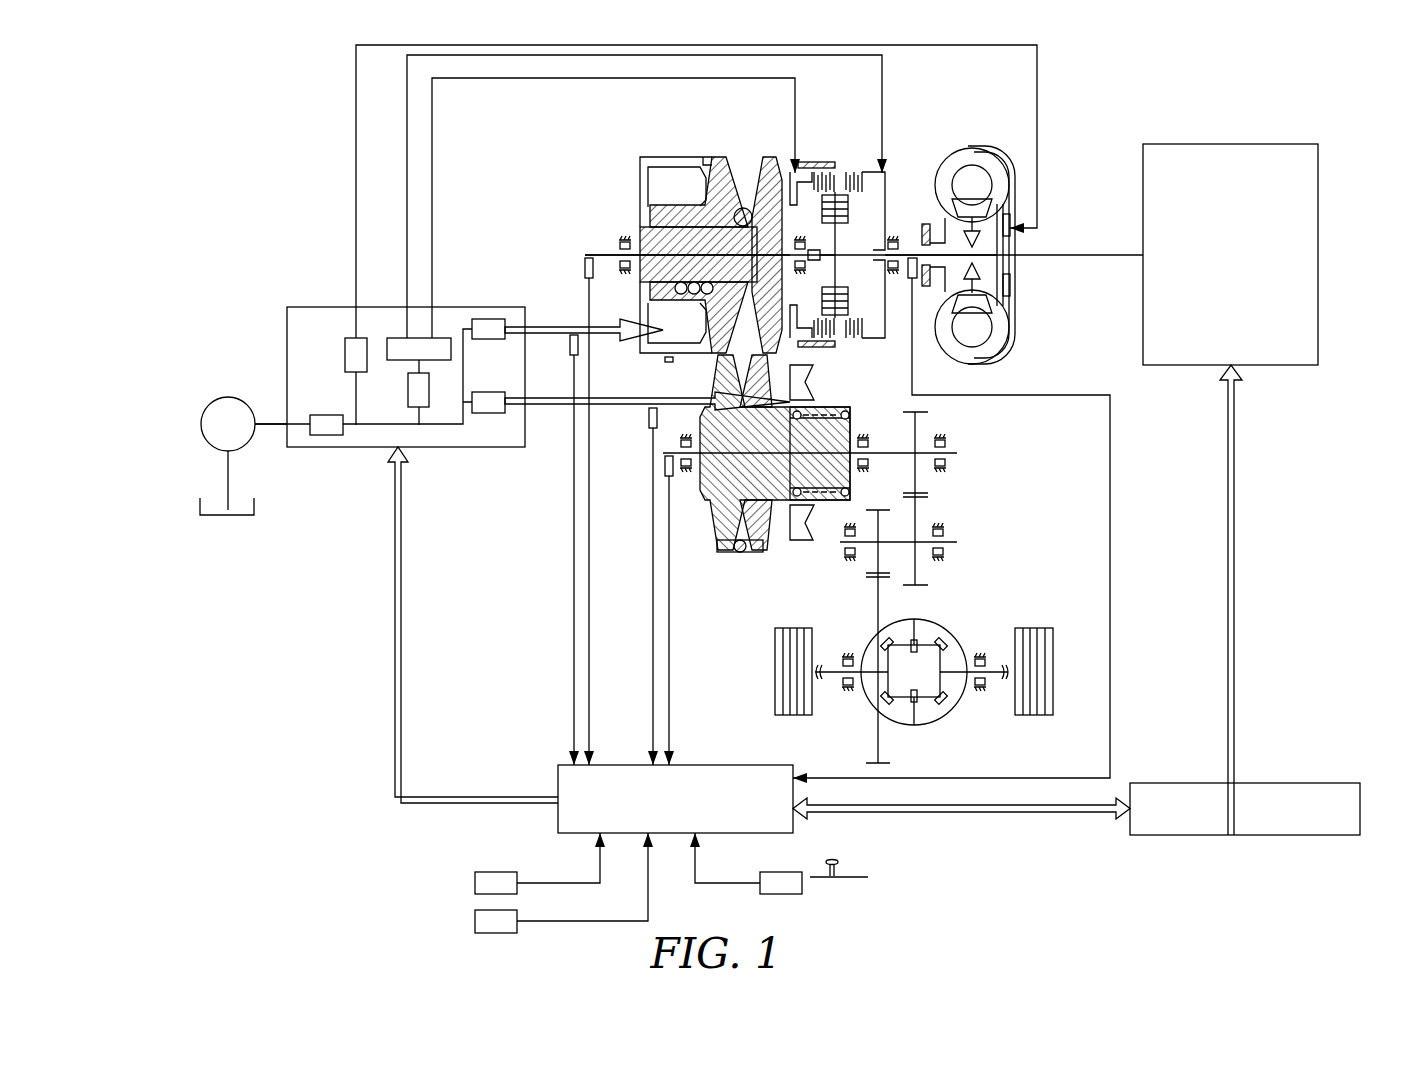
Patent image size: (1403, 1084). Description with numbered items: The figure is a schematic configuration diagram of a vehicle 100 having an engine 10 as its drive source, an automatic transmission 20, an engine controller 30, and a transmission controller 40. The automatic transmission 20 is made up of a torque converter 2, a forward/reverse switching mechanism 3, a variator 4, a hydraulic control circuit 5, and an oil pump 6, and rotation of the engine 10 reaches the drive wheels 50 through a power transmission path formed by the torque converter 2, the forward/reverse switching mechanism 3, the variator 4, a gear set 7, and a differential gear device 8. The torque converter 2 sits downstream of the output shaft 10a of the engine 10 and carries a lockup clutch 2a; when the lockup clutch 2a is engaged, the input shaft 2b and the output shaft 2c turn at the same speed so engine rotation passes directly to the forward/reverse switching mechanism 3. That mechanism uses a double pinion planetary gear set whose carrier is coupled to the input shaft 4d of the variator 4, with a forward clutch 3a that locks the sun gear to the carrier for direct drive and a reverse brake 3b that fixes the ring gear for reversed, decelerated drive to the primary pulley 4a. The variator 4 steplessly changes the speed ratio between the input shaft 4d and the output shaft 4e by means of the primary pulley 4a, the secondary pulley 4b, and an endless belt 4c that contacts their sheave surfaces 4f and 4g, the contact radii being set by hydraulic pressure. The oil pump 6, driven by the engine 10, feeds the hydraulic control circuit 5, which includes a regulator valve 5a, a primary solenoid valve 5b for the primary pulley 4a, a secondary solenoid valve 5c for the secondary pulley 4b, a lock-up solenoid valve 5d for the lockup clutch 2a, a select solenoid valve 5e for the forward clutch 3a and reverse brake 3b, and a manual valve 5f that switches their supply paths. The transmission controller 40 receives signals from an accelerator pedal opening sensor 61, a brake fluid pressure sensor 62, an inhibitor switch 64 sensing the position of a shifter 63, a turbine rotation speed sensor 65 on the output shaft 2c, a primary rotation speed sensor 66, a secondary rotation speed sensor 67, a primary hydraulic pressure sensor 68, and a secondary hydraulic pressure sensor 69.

The torque converter 2 is at (983, 218).
The lockup clutch 2a is at (1012, 285).
The input shaft 2b is at (1018, 228).
The output shaft 2c is at (912, 250).
The forward/reverse switching mechanism 3 is at (837, 203).
The forward clutch 3a is at (852, 172).
The reverse brake 3b is at (810, 168).
The variator 4 is at (622, 190).
The primary pulley 4a is at (655, 160).
The secondary pulley 4b is at (805, 555).
The belt 4c is at (744, 208).
The input shaft 4d is at (605, 253).
The output shaft 4e is at (860, 445).
The sheave surface 4f is at (762, 200).
The sheave surface 4g is at (737, 552).
The hydraulic control circuit 5 is at (390, 376).
The regulator valve 5a is at (331, 436).
The primary solenoid valve 5b is at (490, 319).
The secondary solenoid valve 5c is at (490, 413).
The lock-up solenoid valve 5d is at (348, 338).
The select solenoid valve 5e is at (408, 402).
The manual valve 5f is at (394, 338).
The oil pump 6 is at (215, 397).
The gear set 7 is at (963, 487).
The differential gear device 8 is at (955, 622).
The engine 10 is at (1232, 144).
The output shaft 10a is at (1132, 257).
The automatic transmission 20 is at (1057, 132).
The engine controller 30 is at (1262, 783).
The transmission controller 40 is at (558, 784).
The drive wheels 50 is at (775, 690).
The accelerator pedal opening sensor 61 is at (475, 883).
The brake fluid pressure sensor 62 is at (475, 921).
The shifter 63 is at (840, 860).
The inhibitor switch 64 is at (800, 894).
The turbine rotation speed sensor 65 is at (910, 280).
The primary rotation speed sensor 66 is at (591, 278).
The secondary rotation speed sensor 67 is at (673, 478).
The primary hydraulic pressure sensor 68 is at (570, 352).
The secondary hydraulic pressure sensor 69 is at (649, 430).
The vehicle 100 is at (230, 792).